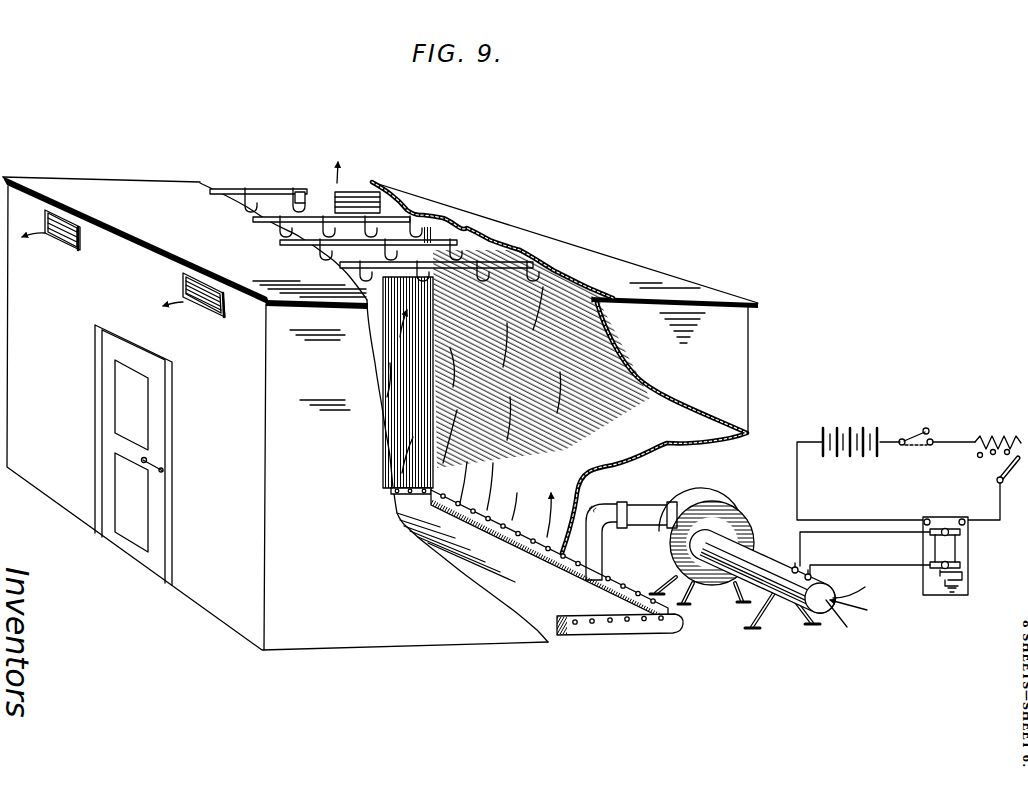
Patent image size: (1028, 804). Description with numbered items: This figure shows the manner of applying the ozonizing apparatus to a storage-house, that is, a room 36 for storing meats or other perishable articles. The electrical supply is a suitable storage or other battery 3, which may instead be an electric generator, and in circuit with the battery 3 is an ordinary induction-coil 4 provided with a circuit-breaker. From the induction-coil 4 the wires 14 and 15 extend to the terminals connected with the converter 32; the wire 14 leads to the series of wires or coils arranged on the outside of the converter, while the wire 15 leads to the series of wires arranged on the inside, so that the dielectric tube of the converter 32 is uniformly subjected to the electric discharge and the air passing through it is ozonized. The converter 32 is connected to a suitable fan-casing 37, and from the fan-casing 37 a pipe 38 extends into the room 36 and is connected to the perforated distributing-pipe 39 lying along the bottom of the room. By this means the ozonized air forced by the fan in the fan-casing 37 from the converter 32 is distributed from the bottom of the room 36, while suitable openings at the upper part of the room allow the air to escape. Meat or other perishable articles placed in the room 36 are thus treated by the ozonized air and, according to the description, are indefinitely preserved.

The battery 3 is at (848, 437).
The induction-coil 4 is at (947, 549).
The wire 14 is at (831, 534).
The wire 15 is at (869, 571).
The converter 32 is at (765, 560).
The room 36 is at (559, 367).
The fan-casing 37 is at (730, 517).
The pipe 38 is at (638, 514).
The perforated distributing-pipe 39 is at (580, 574).